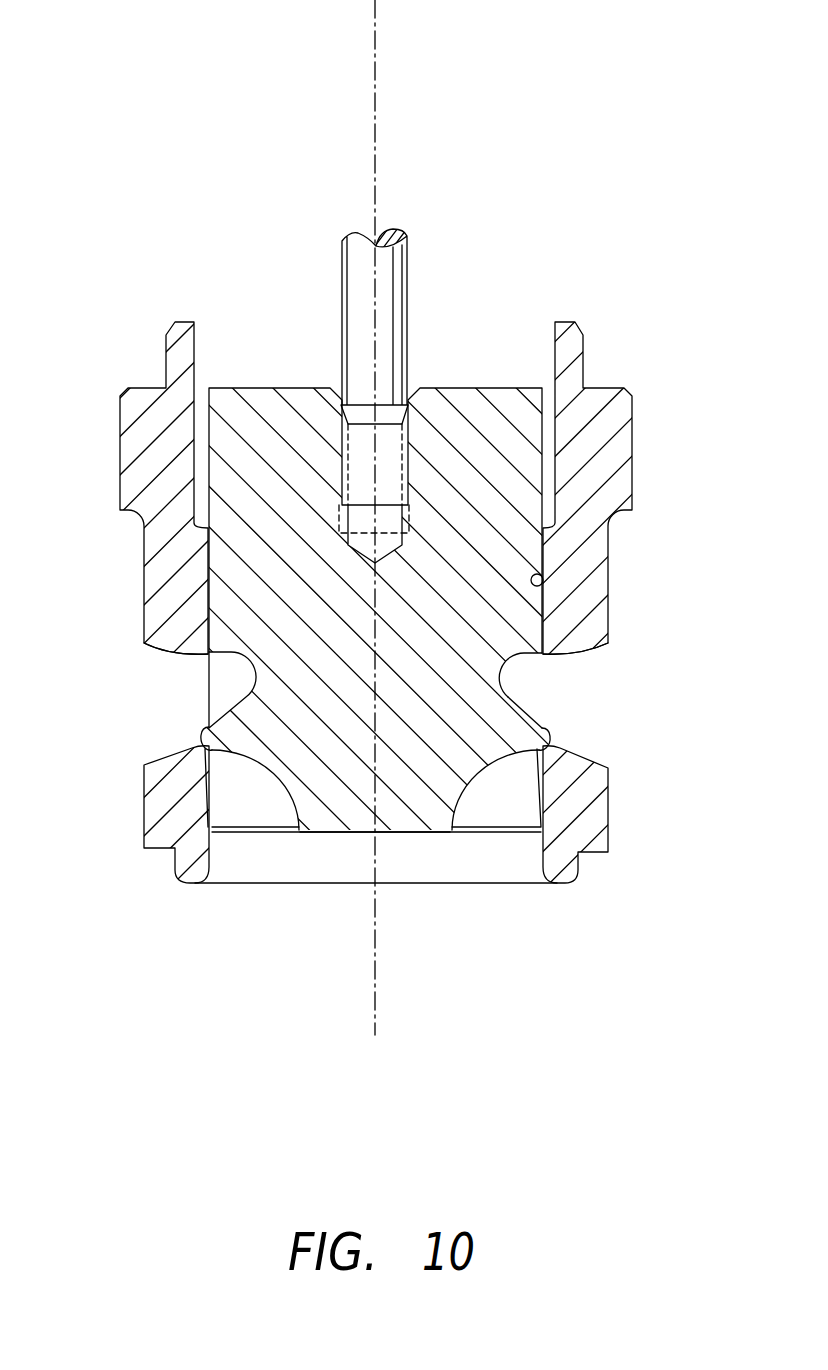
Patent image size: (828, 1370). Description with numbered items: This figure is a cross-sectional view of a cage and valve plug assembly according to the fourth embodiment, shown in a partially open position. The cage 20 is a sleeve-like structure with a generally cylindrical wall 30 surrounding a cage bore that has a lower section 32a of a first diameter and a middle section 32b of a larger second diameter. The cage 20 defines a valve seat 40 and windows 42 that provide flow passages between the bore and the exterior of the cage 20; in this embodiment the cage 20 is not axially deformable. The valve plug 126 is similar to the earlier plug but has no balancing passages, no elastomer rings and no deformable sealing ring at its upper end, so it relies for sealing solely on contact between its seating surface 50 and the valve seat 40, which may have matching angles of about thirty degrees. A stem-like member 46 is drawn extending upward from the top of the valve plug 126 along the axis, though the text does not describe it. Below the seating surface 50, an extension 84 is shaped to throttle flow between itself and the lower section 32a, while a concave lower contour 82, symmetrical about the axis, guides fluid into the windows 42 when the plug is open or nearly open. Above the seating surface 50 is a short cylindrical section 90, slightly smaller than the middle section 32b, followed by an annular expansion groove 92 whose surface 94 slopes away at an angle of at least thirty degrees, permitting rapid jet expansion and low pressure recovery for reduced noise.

The cage 20 is at (132, 831).
The cylindrical wall 30 is at (144, 617).
The lower section 32a is at (538, 848).
The middle section 32b is at (551, 545).
The valve seat 40 is at (283, 832).
The windows 42 is at (168, 714).
The pin 46 is at (341, 273).
The seating surface 50 is at (552, 750).
The lower contour 82 is at (275, 780).
The extension 84 is at (537, 748).
The cylindrical section 90 is at (543, 728).
The expansion groove 92 is at (517, 677).
The surface 94 is at (522, 710).
The valve plug 126 is at (320, 823).